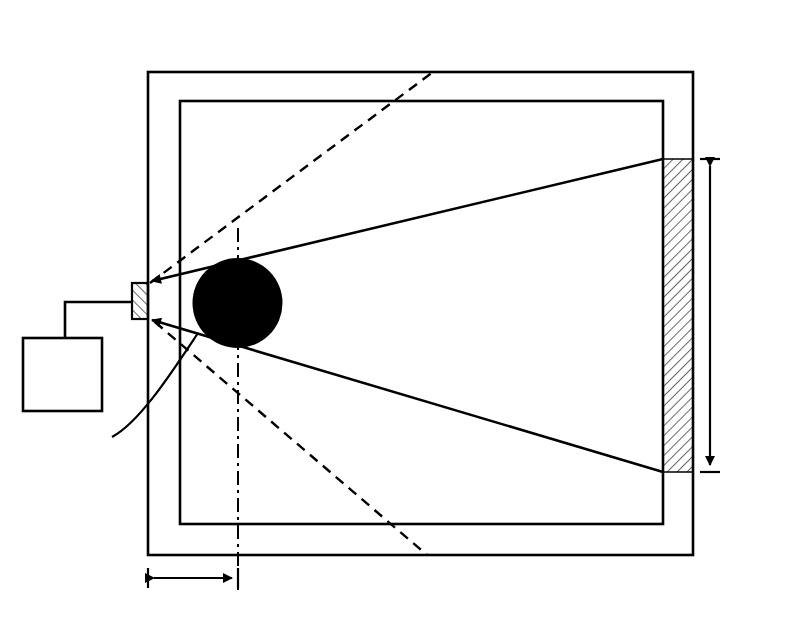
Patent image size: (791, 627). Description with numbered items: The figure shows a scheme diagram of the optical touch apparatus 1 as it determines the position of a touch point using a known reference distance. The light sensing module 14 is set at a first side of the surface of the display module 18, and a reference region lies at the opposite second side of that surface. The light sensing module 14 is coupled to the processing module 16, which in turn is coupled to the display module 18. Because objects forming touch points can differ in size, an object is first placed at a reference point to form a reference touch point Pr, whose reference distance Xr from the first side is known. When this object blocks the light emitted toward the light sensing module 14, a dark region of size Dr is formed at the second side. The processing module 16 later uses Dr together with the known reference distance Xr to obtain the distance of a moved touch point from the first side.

The optical touch apparatus 1 is at (518, 42).
The light sensing module 14 is at (146, 282).
The processing module 16 is at (52, 411).
The display module 18 is at (190, 78).